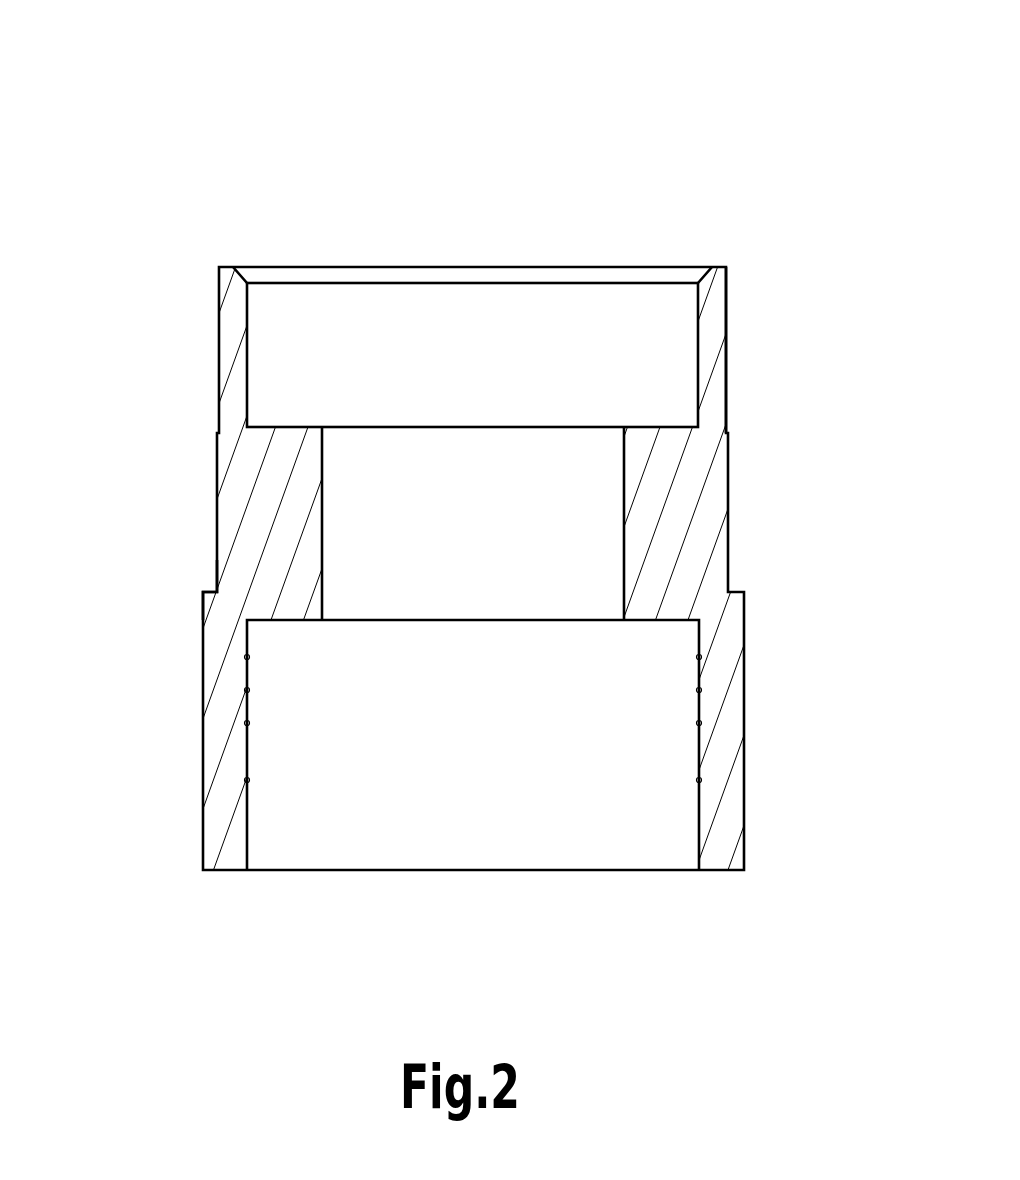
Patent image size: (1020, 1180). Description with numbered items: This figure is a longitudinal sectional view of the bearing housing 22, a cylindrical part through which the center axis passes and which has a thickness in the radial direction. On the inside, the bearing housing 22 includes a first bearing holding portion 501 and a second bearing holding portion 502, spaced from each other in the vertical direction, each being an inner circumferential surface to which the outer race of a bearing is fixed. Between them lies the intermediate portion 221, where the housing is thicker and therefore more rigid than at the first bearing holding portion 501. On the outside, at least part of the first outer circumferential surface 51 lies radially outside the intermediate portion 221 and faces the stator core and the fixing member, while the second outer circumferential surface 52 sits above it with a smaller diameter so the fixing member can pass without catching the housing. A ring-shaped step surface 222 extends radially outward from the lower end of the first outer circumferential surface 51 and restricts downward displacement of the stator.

The bearing housing 22 is at (367, 150).
The intermediate portion 221 is at (283, 511).
The step surface 222 is at (209, 590).
The first outer circumferential surface 51 is at (730, 493).
The second outer circumferential surface 52 is at (727, 362).
The first bearing holding portion 501 is at (577, 342).
The second bearing holding portion 502 is at (397, 803).